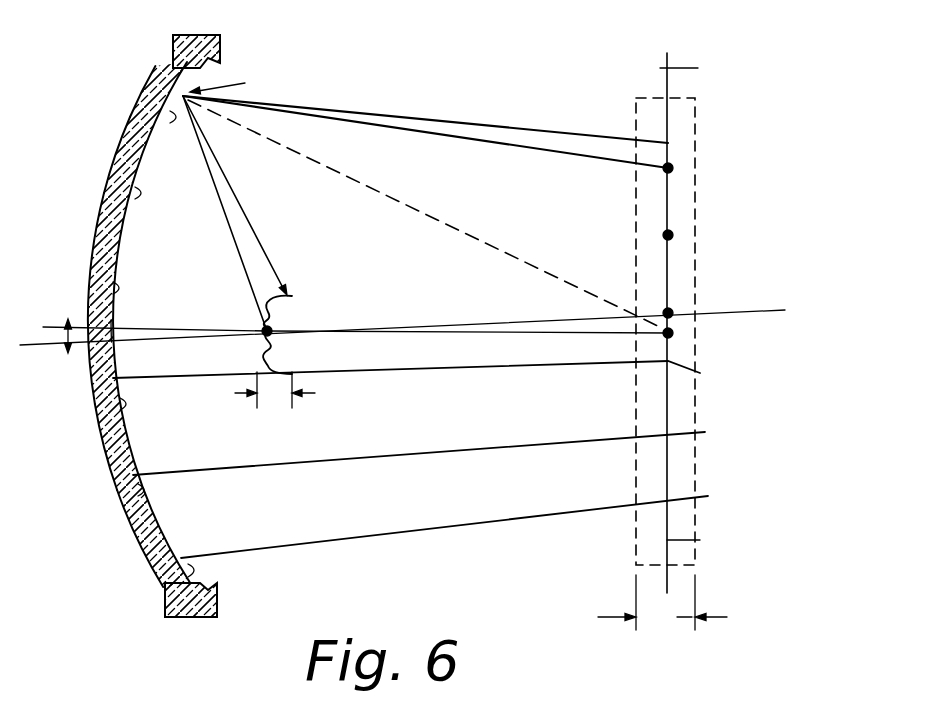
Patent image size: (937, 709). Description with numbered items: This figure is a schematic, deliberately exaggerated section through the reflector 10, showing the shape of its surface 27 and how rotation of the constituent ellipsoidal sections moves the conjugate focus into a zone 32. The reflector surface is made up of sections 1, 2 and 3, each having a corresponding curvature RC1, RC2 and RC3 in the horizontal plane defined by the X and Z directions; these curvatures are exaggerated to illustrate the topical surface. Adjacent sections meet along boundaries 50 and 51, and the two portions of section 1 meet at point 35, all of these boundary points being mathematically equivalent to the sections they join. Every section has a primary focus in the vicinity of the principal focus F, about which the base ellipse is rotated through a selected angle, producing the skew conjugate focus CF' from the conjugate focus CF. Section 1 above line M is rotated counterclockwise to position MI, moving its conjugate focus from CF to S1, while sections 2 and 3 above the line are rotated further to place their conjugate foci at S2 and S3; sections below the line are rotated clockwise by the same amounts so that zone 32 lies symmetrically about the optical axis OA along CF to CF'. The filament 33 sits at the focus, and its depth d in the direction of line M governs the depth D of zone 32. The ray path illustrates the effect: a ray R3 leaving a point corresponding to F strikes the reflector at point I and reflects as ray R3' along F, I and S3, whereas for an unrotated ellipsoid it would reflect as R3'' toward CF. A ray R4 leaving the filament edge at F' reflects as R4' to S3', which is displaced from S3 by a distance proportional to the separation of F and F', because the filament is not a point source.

The reflector 10 is at (221, 40).
The surface 27 is at (127, 440).
The section 1 is at (98, 240).
The section 2 is at (126, 149).
The section 3 is at (170, 70).
The boundary 50 is at (108, 218).
The boundary 51 is at (168, 118).
The curvature RC1 is at (112, 288).
The curvature RC2 is at (133, 191).
The curvature RC3 is at (160, 110).
The point 35 is at (111, 330).
The filament 33 is at (262, 350).
The zone 32 is at (652, 517).
The line M— M is at (732, 333).
The position M1—M1 MI is at (783, 292).
The optical axis OA is at (432, 333).
The x direction X is at (776, 312).
The z direction Z is at (667, 88).
The principal focus F is at (243, 317).
The point F' is at (293, 276).
The depth of filament d is at (275, 390).
The depth of zone D is at (662, 602).
The point I is at (221, 84).
The ray R3 is at (213, 213).
The ray R4 is at (232, 191).
The reflected ray R3' is at (425, 142).
The reflected ray R4' is at (425, 105).
The reflected ray R3'' is at (425, 214).
The point S1 is at (668, 313).
The point S2 is at (668, 235).
The point S3 is at (459, 359).
The point S3' is at (702, 137).
The conjugate focus CF is at (718, 348).
The skew conjugate focus CF' is at (708, 306).